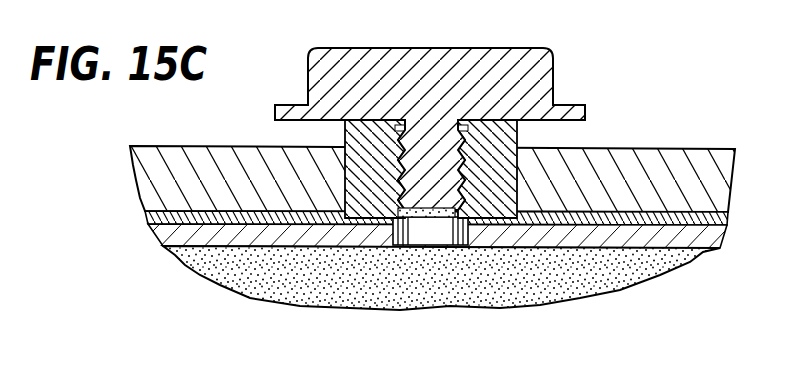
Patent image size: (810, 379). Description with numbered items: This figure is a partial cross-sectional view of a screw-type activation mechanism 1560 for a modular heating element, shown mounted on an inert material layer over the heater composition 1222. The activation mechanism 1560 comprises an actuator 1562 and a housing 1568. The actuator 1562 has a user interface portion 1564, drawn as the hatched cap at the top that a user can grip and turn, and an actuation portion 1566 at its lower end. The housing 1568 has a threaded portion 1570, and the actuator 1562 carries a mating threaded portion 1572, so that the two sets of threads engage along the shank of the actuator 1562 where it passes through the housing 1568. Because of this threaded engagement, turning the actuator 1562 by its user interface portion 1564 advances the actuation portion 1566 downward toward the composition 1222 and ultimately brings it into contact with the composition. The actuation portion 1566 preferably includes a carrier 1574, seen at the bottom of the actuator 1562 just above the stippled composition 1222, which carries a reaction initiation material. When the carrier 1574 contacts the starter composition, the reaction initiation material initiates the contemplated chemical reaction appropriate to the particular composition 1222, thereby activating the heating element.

The activation mechanism 1560 is at (482, 173).
The actuator 1562 is at (440, 78).
The user interface portion 1564 is at (530, 50).
The actuation portion 1566 is at (453, 205).
The housing 1568 is at (505, 172).
The threaded portion 1570 is at (382, 150).
The mating threaded portion 1572 is at (403, 163).
The carrier 1574 is at (448, 188).
The composition 1222 is at (385, 287).